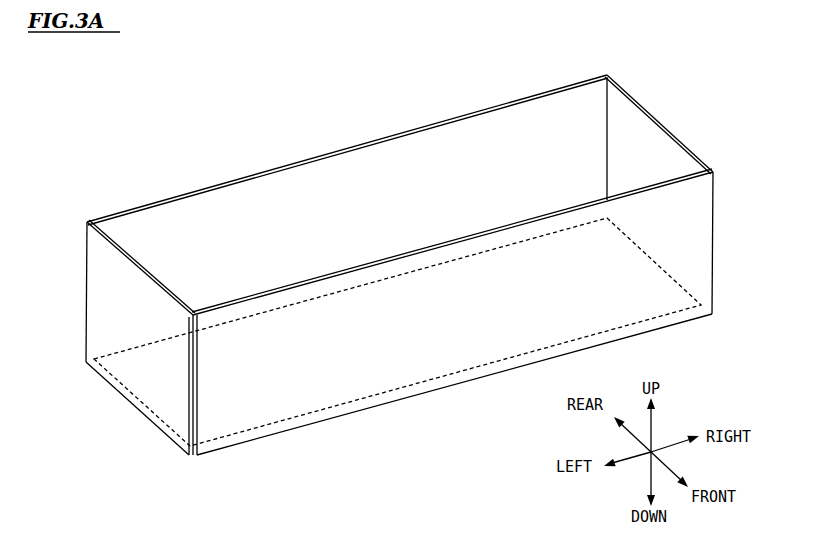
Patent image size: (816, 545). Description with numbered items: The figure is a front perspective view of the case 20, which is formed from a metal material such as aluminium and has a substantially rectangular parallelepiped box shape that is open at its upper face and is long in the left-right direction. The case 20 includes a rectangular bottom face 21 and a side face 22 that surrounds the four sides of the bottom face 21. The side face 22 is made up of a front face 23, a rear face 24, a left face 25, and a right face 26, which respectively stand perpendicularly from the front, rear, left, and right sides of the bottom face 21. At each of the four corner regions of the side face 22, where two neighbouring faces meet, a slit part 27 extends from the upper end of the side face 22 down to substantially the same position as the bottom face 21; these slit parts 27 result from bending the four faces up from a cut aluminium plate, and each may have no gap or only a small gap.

The case 20 is at (404, 261).
The bottom face 21 is at (389, 365).
The side face 22 is at (82, 280).
The front face 23 is at (698, 250).
The rear face 24 is at (382, 165).
The left face 25 is at (107, 340).
The right face 26 is at (654, 153).
The slit part 27 is at (606, 125).